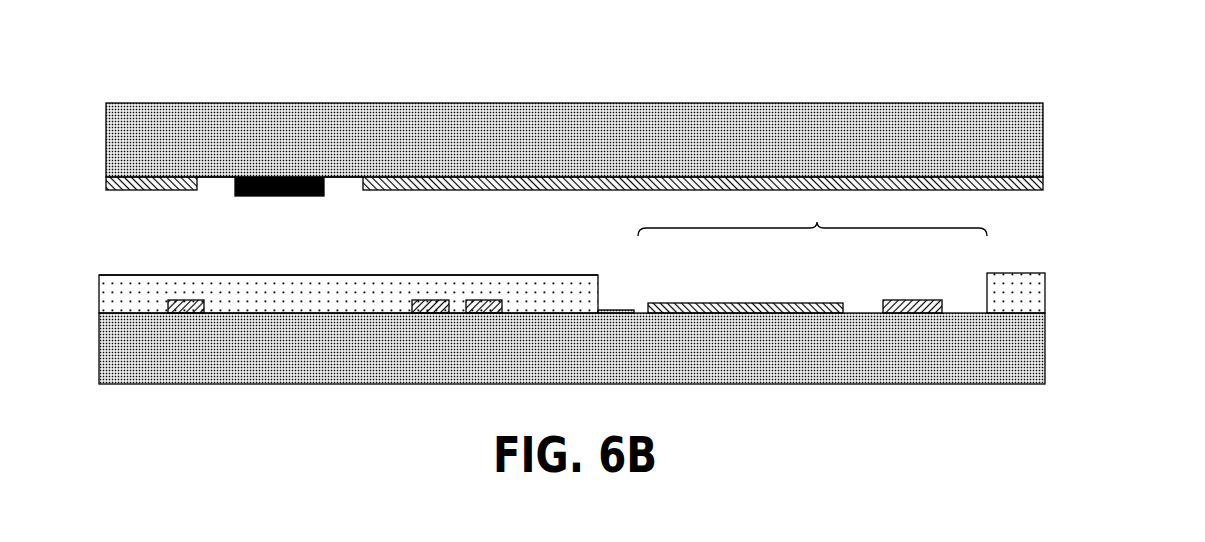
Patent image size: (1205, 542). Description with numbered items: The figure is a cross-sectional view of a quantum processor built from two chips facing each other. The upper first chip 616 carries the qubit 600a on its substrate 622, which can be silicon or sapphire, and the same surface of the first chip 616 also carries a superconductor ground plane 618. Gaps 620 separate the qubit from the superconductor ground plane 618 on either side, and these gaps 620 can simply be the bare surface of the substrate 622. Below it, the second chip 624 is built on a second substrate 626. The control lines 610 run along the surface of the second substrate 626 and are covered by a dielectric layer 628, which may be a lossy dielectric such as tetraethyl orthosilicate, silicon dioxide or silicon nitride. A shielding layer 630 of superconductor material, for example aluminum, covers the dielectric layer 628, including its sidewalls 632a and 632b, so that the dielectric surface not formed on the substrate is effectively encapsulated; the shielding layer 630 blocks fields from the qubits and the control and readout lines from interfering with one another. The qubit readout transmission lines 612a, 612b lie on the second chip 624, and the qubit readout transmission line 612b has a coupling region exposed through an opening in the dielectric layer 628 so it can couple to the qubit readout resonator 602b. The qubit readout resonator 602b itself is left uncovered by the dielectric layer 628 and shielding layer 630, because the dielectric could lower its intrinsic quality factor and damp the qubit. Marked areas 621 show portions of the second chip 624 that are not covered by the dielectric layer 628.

The first chip 616 is at (536, 148).
The superconductor ground plane 618 is at (105, 188).
The gaps 620 is at (215, 191).
The substrate 622 is at (573, 102).
The marked areas 621 is at (817, 222).
The qubit 600a is at (258, 177).
The control lines 610 is at (460, 300).
The qubit readout transmission line 612a is at (186, 299).
The qubit readout transmission line 612b is at (909, 299).
The qubit readout resonator 602b is at (776, 302).
The second chip 624 is at (585, 320).
The second substrate 626 is at (1045, 343).
The dielectric layer 628 is at (99, 296).
The shielding layer 630 is at (143, 275).
The sidewall 632a is at (635, 277).
The sidewall 632b is at (987, 292).